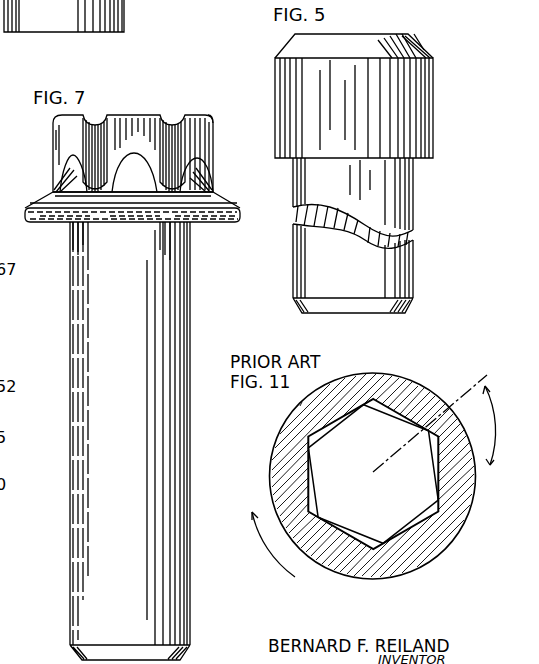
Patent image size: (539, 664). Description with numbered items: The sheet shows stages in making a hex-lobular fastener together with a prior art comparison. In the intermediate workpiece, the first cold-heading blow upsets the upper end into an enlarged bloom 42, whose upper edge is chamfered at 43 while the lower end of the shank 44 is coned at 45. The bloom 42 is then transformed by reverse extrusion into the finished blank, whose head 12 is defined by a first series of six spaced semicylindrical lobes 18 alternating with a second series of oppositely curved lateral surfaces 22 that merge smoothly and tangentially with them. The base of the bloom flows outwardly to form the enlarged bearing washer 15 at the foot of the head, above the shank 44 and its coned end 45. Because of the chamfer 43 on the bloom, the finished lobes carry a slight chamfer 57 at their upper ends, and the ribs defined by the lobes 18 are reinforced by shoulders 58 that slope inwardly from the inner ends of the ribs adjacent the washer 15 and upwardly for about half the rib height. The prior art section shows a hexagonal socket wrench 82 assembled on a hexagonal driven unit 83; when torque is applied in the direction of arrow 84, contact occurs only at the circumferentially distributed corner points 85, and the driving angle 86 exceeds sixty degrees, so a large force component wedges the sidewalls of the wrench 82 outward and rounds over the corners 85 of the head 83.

In FIG. 7, the head portion 12 is at (182, 115).
In FIG. 7, the lobes 18 is at (170, 130).
In FIG. 7, the lateral surfaces 22 is at (120, 142).
In FIG. 7, the chamfer on lobes 57 is at (213, 123).
In FIG. 7, the shoulders 58 is at (188, 172).
In FIG. 7, the bearing washer 15 is at (234, 209).
In FIG. 7, the shank 44 is at (183, 270).
In FIG. 5, the shank 44 is at (418, 230).
In FIG. 7, the coned end 45 is at (77, 653).
In FIG. 5, the coned end 45 is at (410, 308).
In FIG. 5, the bloom 42 is at (433, 100).
In FIG. 5, the chamfer 43 is at (430, 49).
In FIG. 11, the hexagonal socket wrench 82 is at (282, 450).
In FIG. 11, the hexagonal driven unit 83 is at (384, 502).
In FIG. 11, the contact points 85 is at (362, 406).
In FIG. 11, the driving angle 86 is at (440, 423).
In FIG. 11, the arrow 84 is at (265, 550).